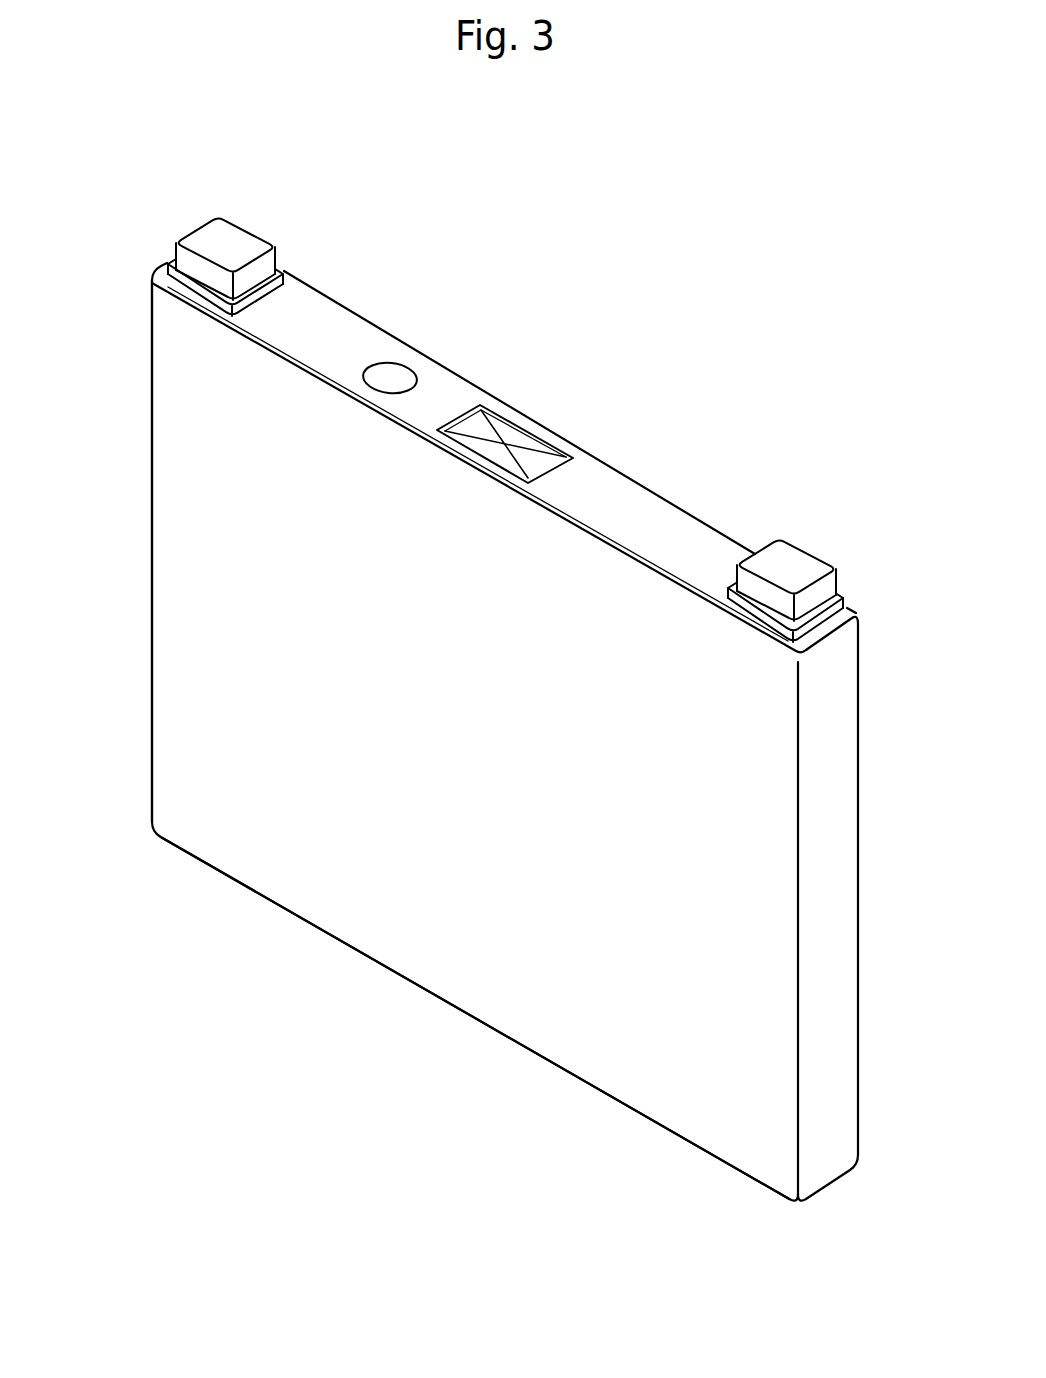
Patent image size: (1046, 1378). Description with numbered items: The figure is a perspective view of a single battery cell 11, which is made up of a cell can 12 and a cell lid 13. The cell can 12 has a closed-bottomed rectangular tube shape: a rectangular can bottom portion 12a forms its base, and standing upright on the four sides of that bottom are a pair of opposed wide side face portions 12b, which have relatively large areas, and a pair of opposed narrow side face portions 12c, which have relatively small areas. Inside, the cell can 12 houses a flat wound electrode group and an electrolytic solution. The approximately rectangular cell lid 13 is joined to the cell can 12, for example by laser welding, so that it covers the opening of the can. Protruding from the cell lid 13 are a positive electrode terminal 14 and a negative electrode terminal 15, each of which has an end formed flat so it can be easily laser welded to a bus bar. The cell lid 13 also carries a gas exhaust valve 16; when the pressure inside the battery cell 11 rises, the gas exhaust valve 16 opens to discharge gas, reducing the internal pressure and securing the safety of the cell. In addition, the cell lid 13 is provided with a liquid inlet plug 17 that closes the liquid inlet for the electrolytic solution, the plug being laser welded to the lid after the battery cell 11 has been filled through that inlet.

The battery cell 11 is at (505, 405).
The cell can 12 is at (500, 732).
The can bottom portion 12a is at (572, 1078).
The wide side face portion 12b is at (278, 773).
The narrow side face portion 12c is at (148, 505).
The cell lid 13 is at (650, 518).
The positive electrode terminal 14 is at (235, 238).
The negative electrode terminal 15 is at (798, 562).
The gas exhaust valve 16 is at (527, 453).
The liquid inlet plug 17 is at (390, 376).